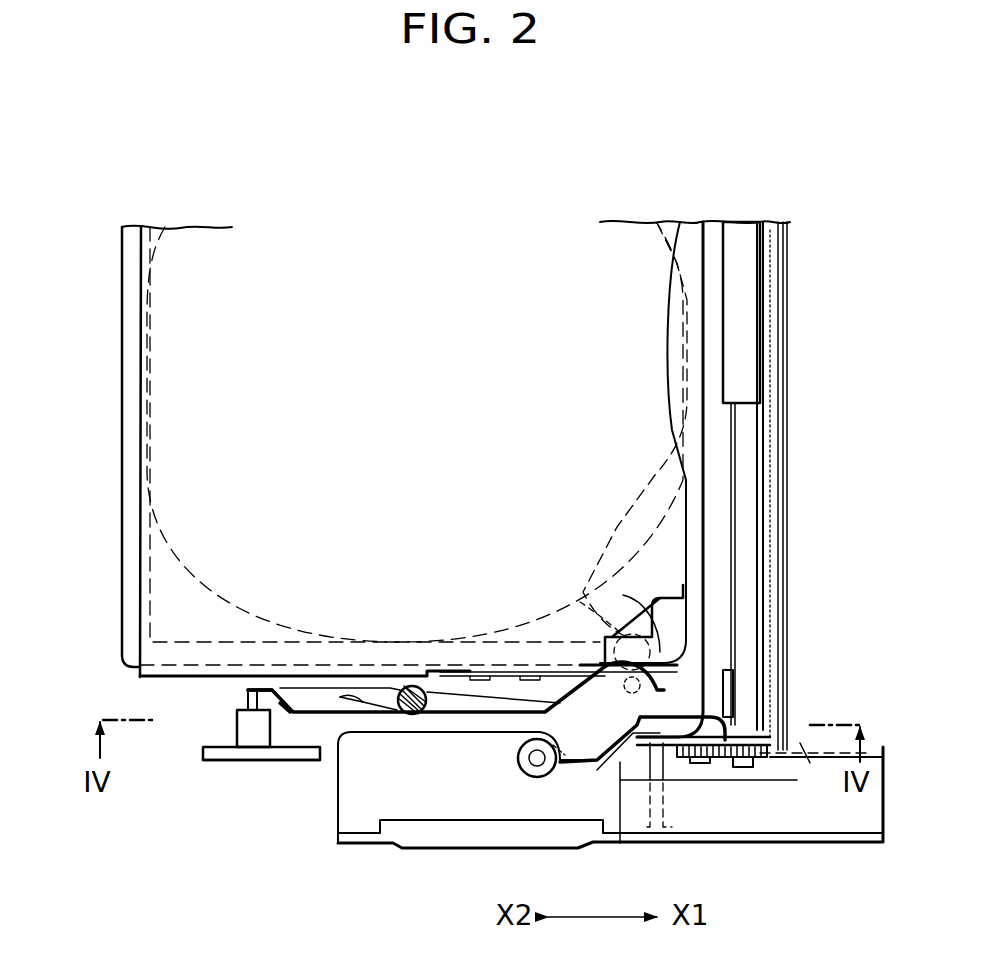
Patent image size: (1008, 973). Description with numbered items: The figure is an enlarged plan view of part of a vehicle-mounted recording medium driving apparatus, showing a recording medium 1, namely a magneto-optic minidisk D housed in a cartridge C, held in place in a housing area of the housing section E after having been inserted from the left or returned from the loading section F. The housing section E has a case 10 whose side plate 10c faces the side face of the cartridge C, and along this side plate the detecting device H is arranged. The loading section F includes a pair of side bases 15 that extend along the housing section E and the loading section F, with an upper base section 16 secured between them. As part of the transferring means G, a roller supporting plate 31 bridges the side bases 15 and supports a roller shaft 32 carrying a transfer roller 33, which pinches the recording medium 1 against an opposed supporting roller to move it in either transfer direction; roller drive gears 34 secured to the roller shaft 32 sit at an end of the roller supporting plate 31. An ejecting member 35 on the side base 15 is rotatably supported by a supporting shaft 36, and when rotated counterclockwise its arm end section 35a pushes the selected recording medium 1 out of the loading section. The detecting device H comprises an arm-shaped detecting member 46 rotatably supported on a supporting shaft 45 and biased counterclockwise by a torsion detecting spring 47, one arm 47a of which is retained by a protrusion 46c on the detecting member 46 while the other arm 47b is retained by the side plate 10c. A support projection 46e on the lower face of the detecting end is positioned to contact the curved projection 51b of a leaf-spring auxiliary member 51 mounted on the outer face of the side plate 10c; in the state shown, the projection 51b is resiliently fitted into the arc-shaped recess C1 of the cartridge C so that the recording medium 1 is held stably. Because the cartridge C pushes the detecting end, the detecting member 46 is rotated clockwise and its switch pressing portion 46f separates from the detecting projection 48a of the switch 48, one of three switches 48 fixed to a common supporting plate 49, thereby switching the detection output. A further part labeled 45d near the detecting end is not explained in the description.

The recording medium 1 is at (122, 478).
The case 10 is at (140, 628).
The side plate 10c is at (153, 678).
The side base 15 is at (745, 813).
The upper base section 16 is at (800, 745).
The roller supporting plate 31 is at (783, 625).
The roller shaft 32 is at (745, 572).
The transfer roller 33 is at (752, 380).
The roller drive gears 34 is at (725, 763).
The ejecting member 35 is at (620, 775).
The arm end section 35a is at (735, 690).
The supporting shaft 36 is at (537, 765).
The supporting shaft 45 is at (460, 715).
The engaging pawl 45d is at (640, 628).
The detecting member 46 is at (493, 723).
The protrusion 46c is at (345, 735).
The support projection 46e is at (660, 690).
The switch pressing portion 46f is at (253, 687).
The torsion detecting spring 47 is at (412, 688).
The arm of detecting spring 47a is at (355, 705).
The arm of detecting spring 47b is at (390, 680).
The switch 48 is at (243, 730).
The detecting projection 48a is at (248, 700).
The supporting plate 49 is at (250, 762).
The auxiliary member 51 is at (500, 672).
The curved projection 51b is at (600, 625).
The cartridge C is at (122, 542).
The recess C1 is at (561, 607).
The minidisk D is at (147, 565).
The housing section E is at (407, 268).
The loading section F is at (825, 812).
The transferring means G is at (760, 515).
The detecting device H is at (497, 742).